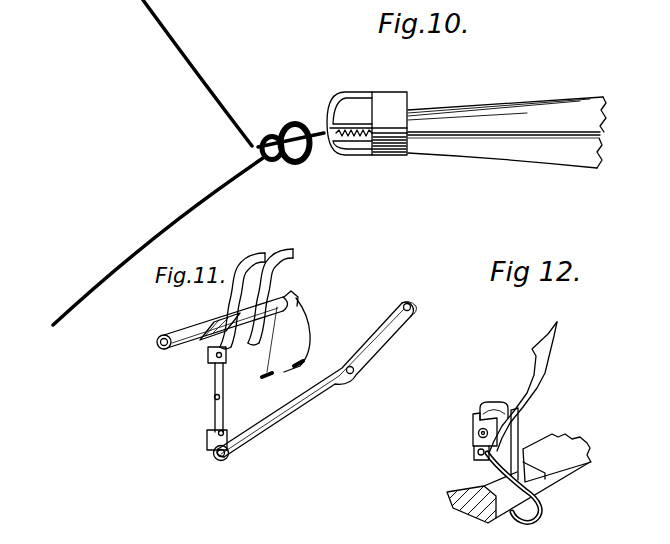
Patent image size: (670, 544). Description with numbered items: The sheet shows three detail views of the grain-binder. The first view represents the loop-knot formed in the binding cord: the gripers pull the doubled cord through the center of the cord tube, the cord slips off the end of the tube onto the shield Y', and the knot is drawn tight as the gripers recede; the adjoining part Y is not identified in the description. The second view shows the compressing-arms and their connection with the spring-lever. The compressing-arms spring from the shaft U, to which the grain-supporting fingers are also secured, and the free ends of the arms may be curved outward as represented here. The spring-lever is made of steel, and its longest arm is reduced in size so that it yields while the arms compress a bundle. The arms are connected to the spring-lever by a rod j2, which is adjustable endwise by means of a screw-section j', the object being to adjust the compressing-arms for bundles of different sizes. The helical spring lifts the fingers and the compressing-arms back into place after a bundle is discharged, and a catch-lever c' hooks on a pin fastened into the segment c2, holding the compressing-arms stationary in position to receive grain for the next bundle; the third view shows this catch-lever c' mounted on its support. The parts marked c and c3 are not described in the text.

In FIG. 10, the handle Y is at (507, 150).
In FIG. 10, the shield Y' is at (389, 123).
In FIG. 11, the shaft U is at (227, 320).
In FIG. 11, the screw-section j' is at (199, 389).
In FIG. 11, the rod j2 is at (223, 421).
In FIG. 11, the segment c2 is at (286, 337).
In FIG. 11, the spring c3 is at (256, 299).
In FIG. 11, the arm c is at (317, 379).
In FIG. 12, the catch-lever c' is at (523, 387).